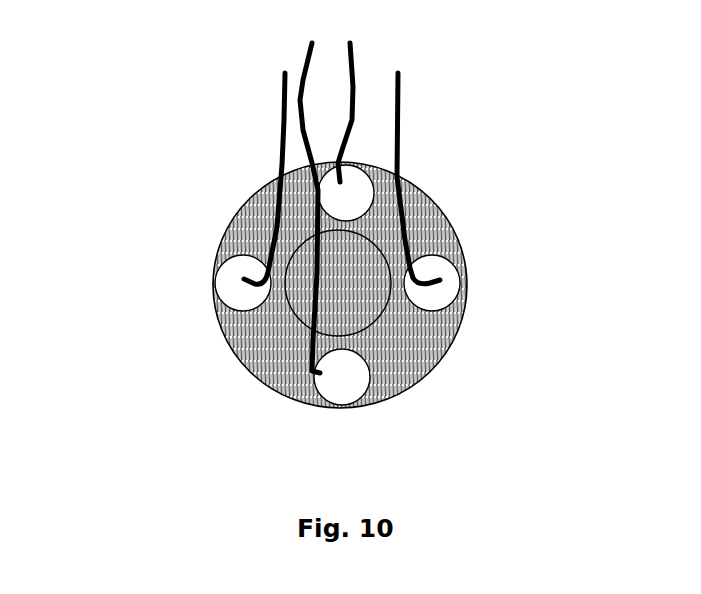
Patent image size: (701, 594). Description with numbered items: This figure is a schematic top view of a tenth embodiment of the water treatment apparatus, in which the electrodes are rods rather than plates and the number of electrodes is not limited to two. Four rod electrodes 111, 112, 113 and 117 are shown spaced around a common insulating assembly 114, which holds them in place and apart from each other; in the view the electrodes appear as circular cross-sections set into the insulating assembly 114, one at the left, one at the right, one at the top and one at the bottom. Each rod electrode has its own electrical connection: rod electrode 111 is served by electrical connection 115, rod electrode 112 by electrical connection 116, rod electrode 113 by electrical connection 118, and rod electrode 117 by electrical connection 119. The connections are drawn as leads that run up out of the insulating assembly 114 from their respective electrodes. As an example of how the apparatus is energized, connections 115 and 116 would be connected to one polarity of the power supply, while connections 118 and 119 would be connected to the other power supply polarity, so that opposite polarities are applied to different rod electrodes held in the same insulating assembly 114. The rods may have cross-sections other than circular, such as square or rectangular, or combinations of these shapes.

The rod electrode 111 is at (190, 286).
The rod electrode 112 is at (460, 268).
The rod electrode 113 is at (298, 193).
The insulating assembly 114 is at (278, 342).
The electrical connection 115 is at (270, 105).
The electrical connection 116 is at (414, 112).
The rod electrode 117 is at (312, 388).
The electrical connection 118 is at (372, 47).
The electrical connection 119 is at (290, 55).